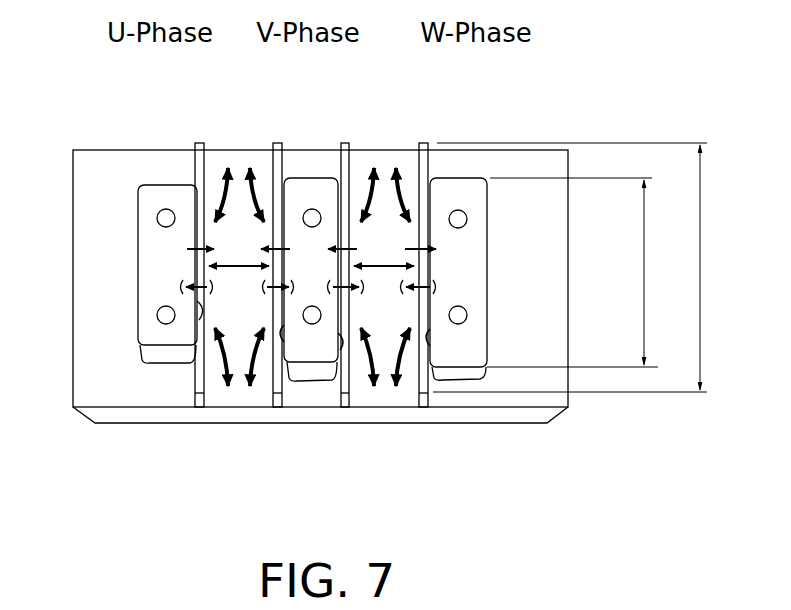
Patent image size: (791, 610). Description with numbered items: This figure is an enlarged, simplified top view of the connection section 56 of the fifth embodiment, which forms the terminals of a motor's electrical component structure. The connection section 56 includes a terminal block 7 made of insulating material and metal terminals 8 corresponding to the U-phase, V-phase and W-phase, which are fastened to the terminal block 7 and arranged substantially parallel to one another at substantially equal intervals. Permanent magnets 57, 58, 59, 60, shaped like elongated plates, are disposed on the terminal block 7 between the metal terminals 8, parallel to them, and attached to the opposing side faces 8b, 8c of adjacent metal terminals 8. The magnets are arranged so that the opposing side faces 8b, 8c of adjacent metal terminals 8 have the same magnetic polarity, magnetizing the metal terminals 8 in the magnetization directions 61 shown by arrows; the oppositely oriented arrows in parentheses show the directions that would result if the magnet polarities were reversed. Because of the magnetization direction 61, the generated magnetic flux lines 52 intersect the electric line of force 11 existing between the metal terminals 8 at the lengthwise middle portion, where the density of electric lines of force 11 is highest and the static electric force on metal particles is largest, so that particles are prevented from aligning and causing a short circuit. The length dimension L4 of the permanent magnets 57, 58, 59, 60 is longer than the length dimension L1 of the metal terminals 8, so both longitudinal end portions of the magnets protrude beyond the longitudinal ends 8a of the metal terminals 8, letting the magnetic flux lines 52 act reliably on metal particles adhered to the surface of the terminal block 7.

The terminal block 7 is at (543, 158).
The connection section 56 is at (554, 77).
The permanent magnet 57 is at (199, 143).
The permanent magnet 58 is at (276, 143).
The permanent magnet 59 is at (345, 143).
The permanent magnet 60 is at (423, 143).
The metal terminal 8 is at (132, 191).
The longitudinal end 8a is at (472, 178).
The side face 8b is at (203, 308).
The side face 8c is at (284, 332).
The magnetic flux lines 52 is at (226, 163).
The magnetization direction 61 is at (275, 247).
The electric line of force 11 is at (210, 278).
The length dimension of the metal terminals L1 is at (580, 272).
The length dimension of the permanent magnets L4 is at (583, 267).